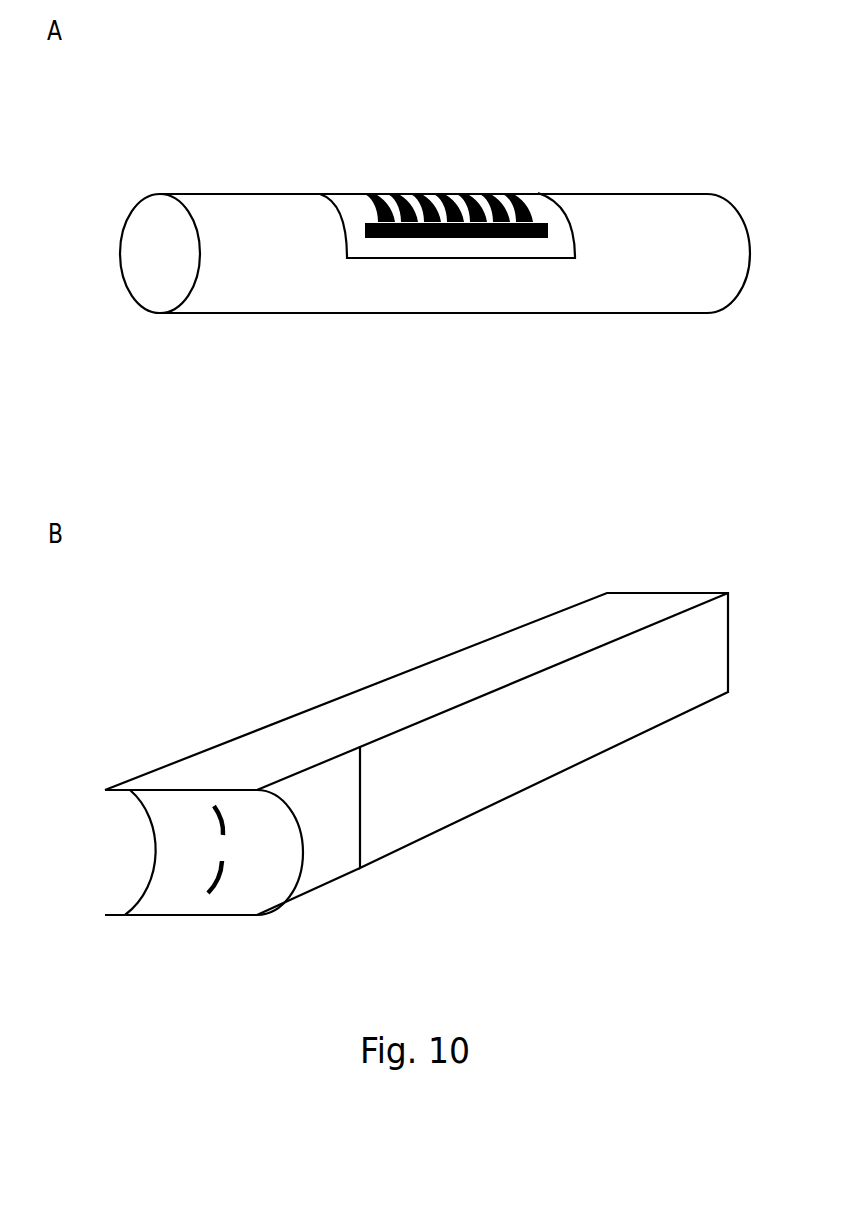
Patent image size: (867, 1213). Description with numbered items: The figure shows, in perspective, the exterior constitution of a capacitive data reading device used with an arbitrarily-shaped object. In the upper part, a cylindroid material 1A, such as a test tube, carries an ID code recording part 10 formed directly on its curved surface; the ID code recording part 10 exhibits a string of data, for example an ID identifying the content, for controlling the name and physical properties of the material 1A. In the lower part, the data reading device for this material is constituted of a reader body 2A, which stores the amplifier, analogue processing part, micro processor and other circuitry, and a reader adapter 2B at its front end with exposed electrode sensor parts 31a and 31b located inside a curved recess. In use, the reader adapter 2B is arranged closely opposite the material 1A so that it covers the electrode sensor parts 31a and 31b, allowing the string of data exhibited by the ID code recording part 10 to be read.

The cylindroid material 1A is at (268, 202).
The ID code recording part 10 is at (399, 193).
The reader body 2A is at (397, 687).
The reader adapter 2B is at (182, 772).
The electrode sensor part 31a is at (216, 835).
The electrode sensor part 31b is at (207, 895).